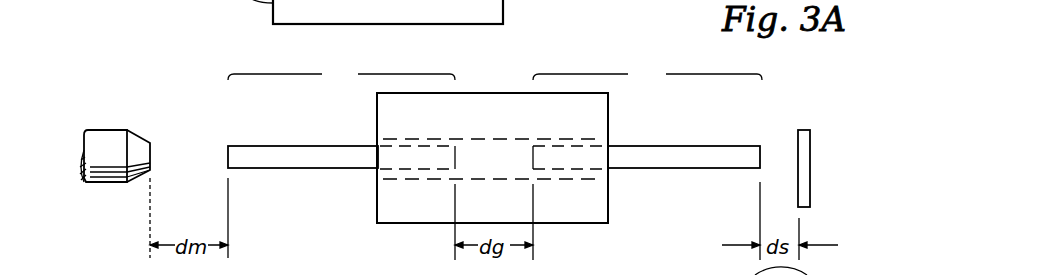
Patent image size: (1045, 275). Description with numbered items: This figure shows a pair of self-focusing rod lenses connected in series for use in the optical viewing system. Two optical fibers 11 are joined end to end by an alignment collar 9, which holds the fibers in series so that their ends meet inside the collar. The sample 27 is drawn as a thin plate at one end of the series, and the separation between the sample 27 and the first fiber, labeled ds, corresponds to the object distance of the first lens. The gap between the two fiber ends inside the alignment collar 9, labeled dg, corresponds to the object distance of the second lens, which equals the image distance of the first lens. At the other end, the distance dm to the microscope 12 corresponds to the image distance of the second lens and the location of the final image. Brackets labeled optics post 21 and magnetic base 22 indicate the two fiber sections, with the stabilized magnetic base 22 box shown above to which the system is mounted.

The alignment collar 9 is at (492, 93).
The optical fiber 11 is at (302, 146).
The microscope 12 is at (113, 130).
The optics post 21 is at (341, 75).
The magnetic base 22 is at (647, 75).
The sample 27 is at (806, 128).